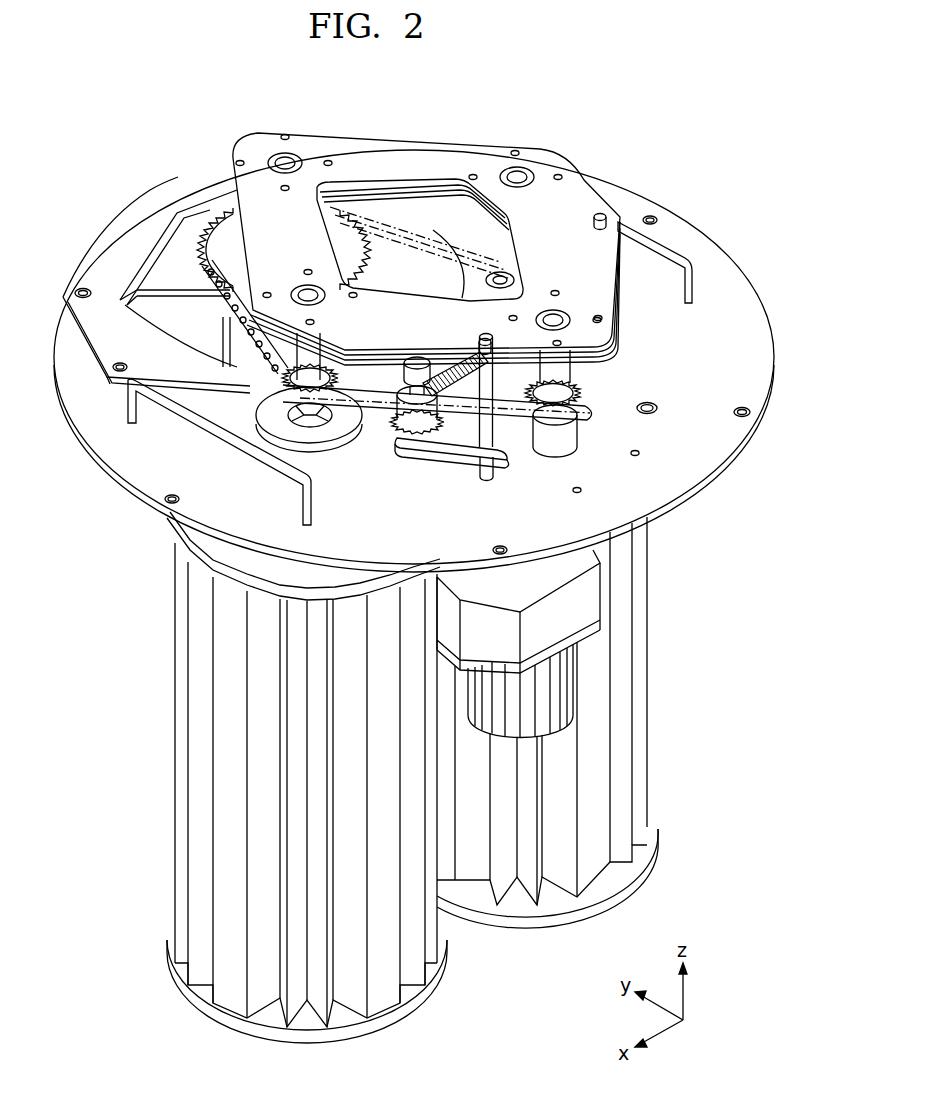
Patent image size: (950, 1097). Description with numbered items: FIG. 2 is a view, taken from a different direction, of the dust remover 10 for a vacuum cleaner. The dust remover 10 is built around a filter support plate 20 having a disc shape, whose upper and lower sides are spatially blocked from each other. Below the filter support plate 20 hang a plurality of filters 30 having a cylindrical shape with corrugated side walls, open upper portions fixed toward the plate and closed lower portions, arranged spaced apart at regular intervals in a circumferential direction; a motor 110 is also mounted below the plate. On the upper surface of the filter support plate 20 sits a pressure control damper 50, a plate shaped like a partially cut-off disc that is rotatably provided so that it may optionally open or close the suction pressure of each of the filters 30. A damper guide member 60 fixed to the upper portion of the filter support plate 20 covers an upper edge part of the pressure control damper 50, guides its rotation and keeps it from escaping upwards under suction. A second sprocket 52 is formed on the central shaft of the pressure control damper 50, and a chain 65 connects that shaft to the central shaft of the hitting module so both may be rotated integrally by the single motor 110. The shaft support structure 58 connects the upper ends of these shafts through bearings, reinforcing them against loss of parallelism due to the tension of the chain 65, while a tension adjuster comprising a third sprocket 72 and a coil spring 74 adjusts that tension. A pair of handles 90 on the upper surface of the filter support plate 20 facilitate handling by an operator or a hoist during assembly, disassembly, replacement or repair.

The dust remover 10 is at (628, 150).
The filter support plate 20 is at (737, 312).
The filters 30 is at (475, 877).
The pressure control damper 50 is at (180, 262).
The second sprocket 52 is at (227, 240).
The shaft support structure 58 is at (404, 150).
The damper guide member 60 is at (130, 240).
The chain 65 is at (160, 300).
The third sprocket 72 is at (427, 440).
The coil spring 74 is at (493, 390).
The handles 90 is at (680, 252).
The motor 110 is at (555, 683).